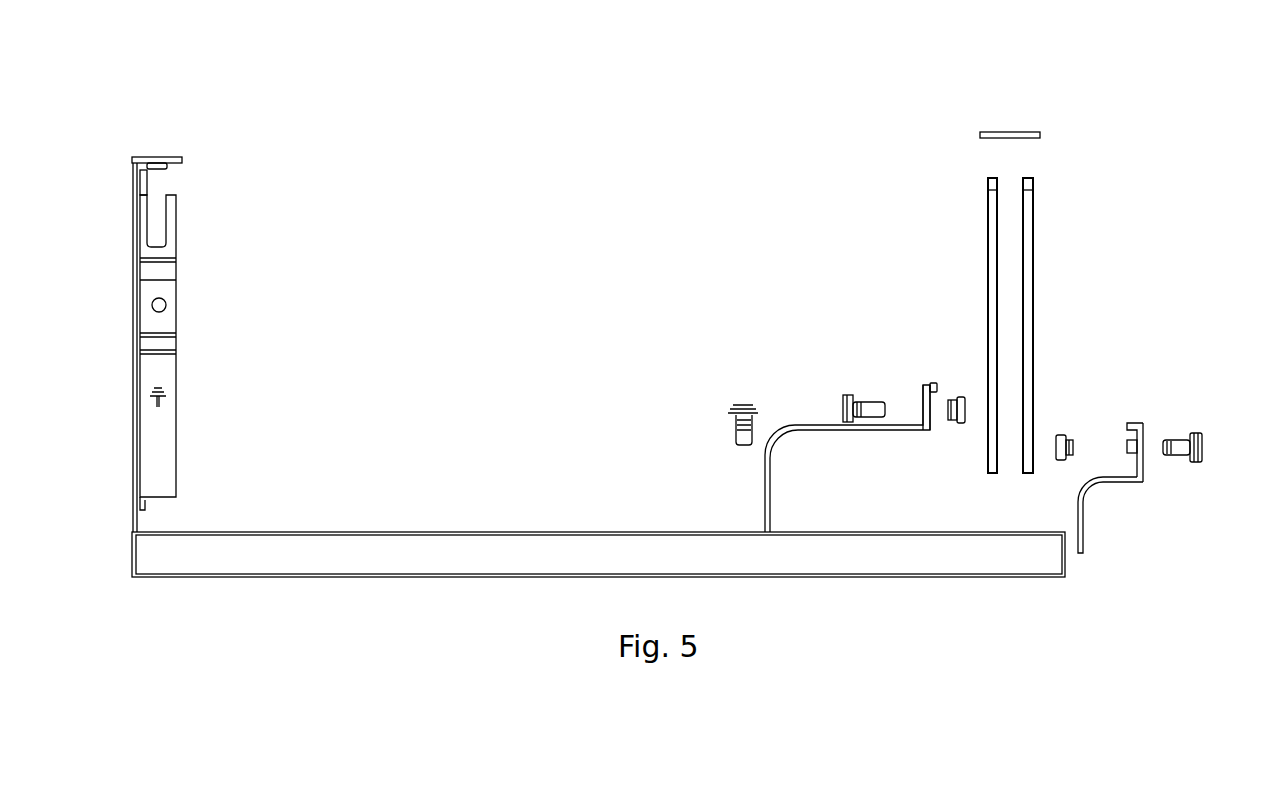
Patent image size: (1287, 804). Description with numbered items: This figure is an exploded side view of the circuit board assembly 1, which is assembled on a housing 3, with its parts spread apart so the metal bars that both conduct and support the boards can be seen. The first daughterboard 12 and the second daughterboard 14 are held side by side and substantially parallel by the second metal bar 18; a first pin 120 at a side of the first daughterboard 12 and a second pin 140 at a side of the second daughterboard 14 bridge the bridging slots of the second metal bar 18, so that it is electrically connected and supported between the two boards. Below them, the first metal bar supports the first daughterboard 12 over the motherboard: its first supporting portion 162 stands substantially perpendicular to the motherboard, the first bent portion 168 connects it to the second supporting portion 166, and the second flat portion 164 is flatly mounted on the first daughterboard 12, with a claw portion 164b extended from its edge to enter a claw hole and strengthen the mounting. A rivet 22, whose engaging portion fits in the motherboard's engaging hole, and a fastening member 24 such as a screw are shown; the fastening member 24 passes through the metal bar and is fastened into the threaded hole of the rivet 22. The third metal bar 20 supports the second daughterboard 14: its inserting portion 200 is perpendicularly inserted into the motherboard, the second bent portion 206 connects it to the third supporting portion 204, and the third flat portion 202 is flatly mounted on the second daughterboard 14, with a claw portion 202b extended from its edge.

The circuit board assembly 1 is at (553, 131).
The housing 3 is at (167, 157).
The first daughterboard 12 is at (987, 230).
The first pin 120 is at (990, 176).
The second daughterboard 14 is at (1035, 232).
The second pin 140 is at (1030, 176).
The second metal bar 18 is at (1000, 130).
The rivet 22 is at (1060, 434).
The fastening member 24 is at (1196, 433).
The first supporting portion 162 is at (763, 497).
The second flat portion 164 is at (922, 408).
The claw portion 164b is at (932, 384).
The second supporting portion 166 is at (821, 423).
The first bent portion 168 is at (781, 424).
The third metal bar 20 is at (1203, 475).
The inserting portion 200 is at (1085, 545).
The third flat portion 202 is at (1141, 468).
The claw portion 202b is at (1136, 424).
The third supporting portion 204 is at (1122, 482).
The second bent portion 206 is at (1092, 492).